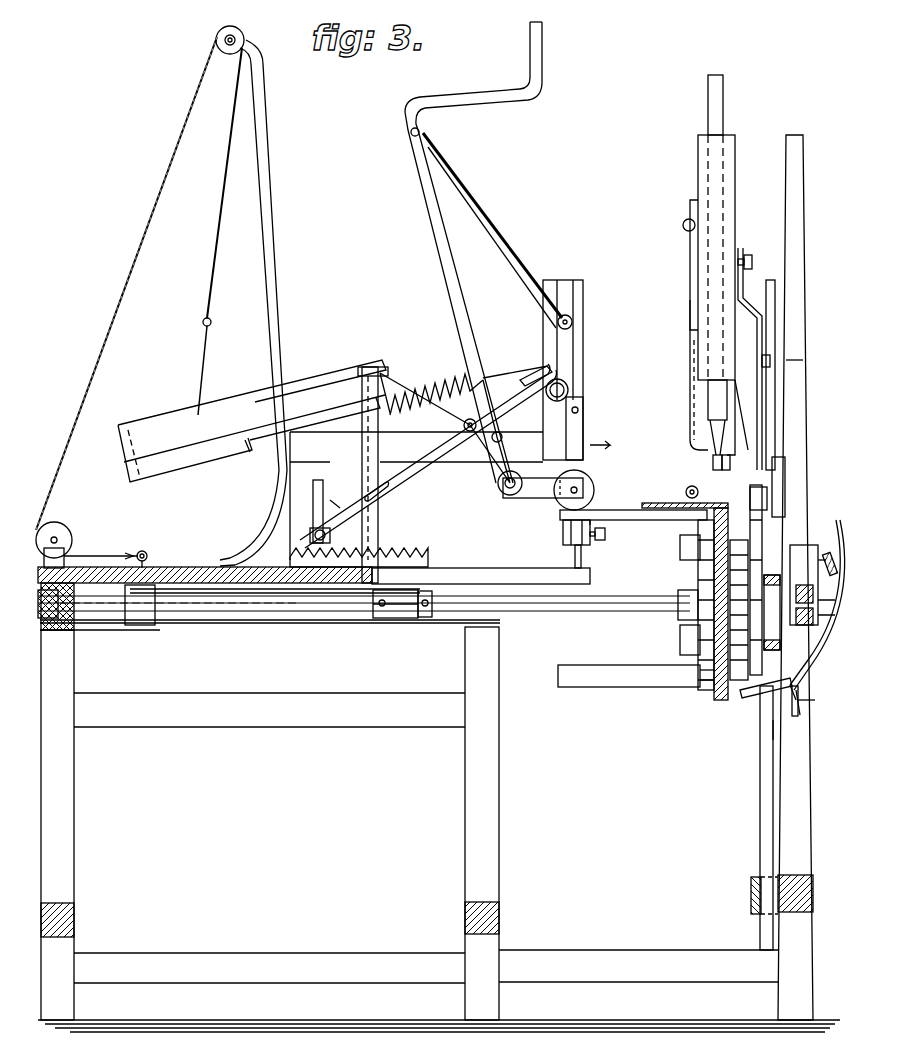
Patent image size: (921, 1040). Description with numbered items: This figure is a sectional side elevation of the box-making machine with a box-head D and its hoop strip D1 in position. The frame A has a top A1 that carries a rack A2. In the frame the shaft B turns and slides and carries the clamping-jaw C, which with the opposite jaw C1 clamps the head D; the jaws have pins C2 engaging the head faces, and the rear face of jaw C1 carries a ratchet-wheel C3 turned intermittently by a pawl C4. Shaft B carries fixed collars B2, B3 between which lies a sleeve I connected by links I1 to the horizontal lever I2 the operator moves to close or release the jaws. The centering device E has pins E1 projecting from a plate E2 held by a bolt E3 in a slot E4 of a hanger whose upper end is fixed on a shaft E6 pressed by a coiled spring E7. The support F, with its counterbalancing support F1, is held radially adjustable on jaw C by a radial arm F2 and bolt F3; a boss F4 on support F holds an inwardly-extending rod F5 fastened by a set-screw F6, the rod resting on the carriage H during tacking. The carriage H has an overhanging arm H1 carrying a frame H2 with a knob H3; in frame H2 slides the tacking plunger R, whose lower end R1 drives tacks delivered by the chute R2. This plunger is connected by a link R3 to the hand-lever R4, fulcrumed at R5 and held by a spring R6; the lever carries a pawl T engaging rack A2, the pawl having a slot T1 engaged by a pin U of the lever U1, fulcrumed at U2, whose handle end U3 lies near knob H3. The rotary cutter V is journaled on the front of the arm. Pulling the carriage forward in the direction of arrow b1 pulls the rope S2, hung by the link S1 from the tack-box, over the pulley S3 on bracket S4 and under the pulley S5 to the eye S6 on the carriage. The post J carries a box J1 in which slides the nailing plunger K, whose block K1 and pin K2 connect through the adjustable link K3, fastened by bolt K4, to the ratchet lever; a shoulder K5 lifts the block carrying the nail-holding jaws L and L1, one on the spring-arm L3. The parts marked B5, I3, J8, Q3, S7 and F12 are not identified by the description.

The frame A is at (439, 829).
The top of the frame A1 is at (262, 600).
The rack A2 is at (380, 545).
The shaft B is at (525, 607).
The fixed collar B2 is at (430, 618).
The fixed collar B3 is at (385, 618).
The arm B5 is at (814, 673).
The clamping-jaw C is at (695, 627).
The clamping-jaw C1 is at (748, 560).
The pins C2 is at (691, 675).
The ratchet-wheel C3 is at (745, 705).
The pawl C4 is at (762, 530).
The box-head D is at (714, 695).
The strip of wood D1 is at (668, 497).
The centering device E is at (815, 613).
The pins E1 is at (764, 707).
The transversely-extending plate E2 is at (775, 740).
The bolt E3 is at (814, 701).
The vertically-disposed slot E4 is at (829, 641).
The transversely-extending shaft E6 is at (832, 540).
The coiled spring E7 is at (838, 555).
The support F is at (630, 535).
The second support F1 is at (620, 655).
The radial arm F2 is at (678, 555).
The bolt F3 is at (678, 645).
The boss F4 is at (575, 528).
The inwardly-extending rod F5 is at (570, 553).
The set-screw F6 is at (606, 534).
The plate F12 is at (674, 675).
The carriage H is at (362, 445).
The overhanging arm H1 is at (483, 548).
The frame H2 is at (583, 412).
The knob H3 is at (569, 388).
The sleeve I is at (412, 620).
The links I1 is at (333, 600).
The lever I2 is at (700, 410).
The bar I3 is at (105, 600).
The post J is at (755, 815).
The box J1 is at (690, 255).
The gear J8 is at (712, 493).
The plunger K is at (705, 115).
The block K1 is at (752, 250).
The pin K2 is at (708, 445).
The link K3 is at (752, 305).
The bolt K4 is at (775, 375).
The shoulder K5 is at (810, 355).
The nail-holding jaw L is at (712, 465).
The nail-holding jaw L1 is at (735, 465).
The spring-arm L3 is at (745, 415).
The hub Q3 is at (785, 613).
The plunger R is at (575, 350).
The lower end of plunger R1 is at (580, 472).
The chute R2 is at (455, 422).
The link R3 is at (490, 222).
The hand-lever R4 is at (452, 262).
The fulcrum R5 is at (510, 495).
The spring R6 is at (462, 380).
The link S1 is at (320, 370).
The rope S2 is at (215, 245).
The pulley S3 is at (248, 38).
The bracket S4 is at (268, 192).
The pulley S5 is at (72, 532).
The eye S6 is at (150, 550).
The rod S7 is at (200, 360).
The pawl T is at (345, 520).
The slot T1 is at (400, 515).
The pin U is at (508, 430).
The lever U1 is at (390, 476).
The fulcrum U2 is at (470, 418).
The handle end U3 is at (545, 375).
The rotary cutter V is at (593, 492).
The arrow b1 is at (605, 437).